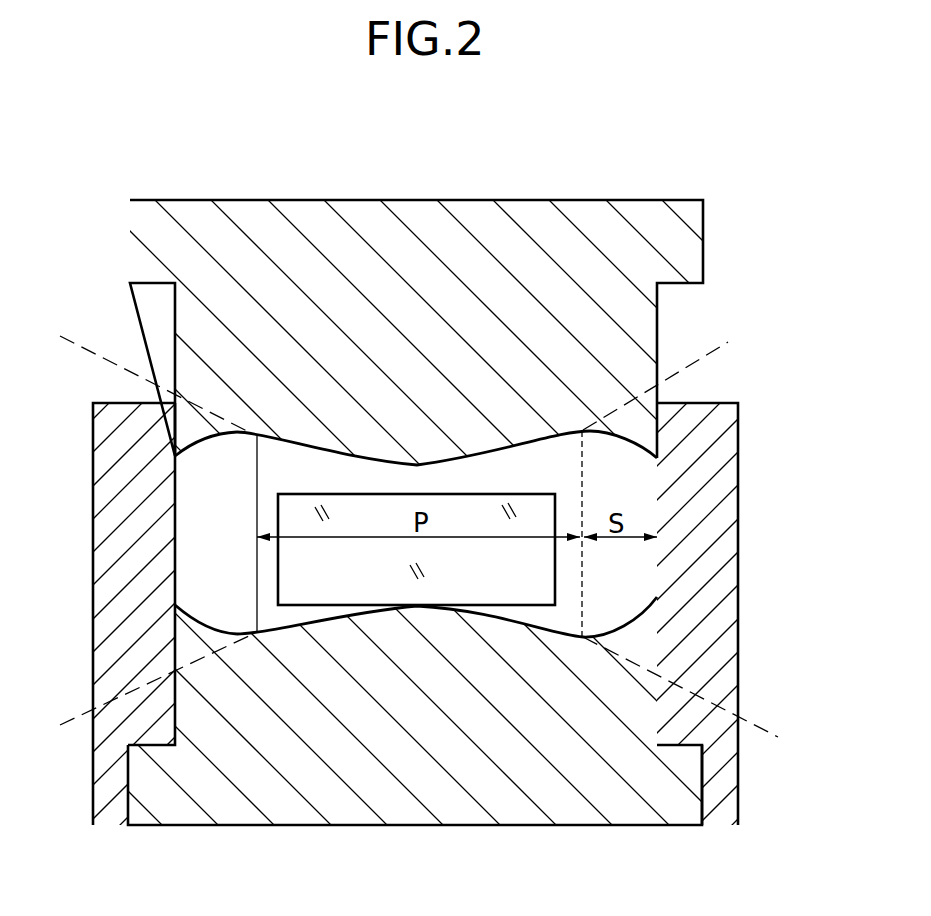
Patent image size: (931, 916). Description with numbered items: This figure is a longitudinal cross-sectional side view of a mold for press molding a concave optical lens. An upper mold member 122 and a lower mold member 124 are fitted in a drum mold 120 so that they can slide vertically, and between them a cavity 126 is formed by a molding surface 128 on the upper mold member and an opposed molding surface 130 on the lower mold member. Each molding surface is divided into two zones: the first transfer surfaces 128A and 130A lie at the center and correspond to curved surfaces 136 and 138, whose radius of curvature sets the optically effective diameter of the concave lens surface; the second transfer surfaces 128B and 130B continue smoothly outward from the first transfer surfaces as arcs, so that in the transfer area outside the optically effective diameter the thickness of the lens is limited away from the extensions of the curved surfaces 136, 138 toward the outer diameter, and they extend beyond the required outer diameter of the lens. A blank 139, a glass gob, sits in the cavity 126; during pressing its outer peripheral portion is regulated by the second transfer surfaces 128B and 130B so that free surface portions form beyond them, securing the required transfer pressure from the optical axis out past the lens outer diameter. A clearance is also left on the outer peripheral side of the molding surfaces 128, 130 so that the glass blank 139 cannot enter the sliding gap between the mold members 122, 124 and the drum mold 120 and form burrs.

The drum mold 120 is at (465, 641).
The upper mold member 122 is at (693, 252).
The lower mold member 124 is at (518, 812).
The cavity 126 is at (640, 502).
The molding surface 128 is at (416, 459).
The first transfer surface 128A is at (358, 440).
The second transfer surface 128B is at (200, 447).
The molding surface 130 is at (416, 604).
The first transfer surface 130A is at (336, 612).
The second transfer surface 130B is at (205, 622).
The curved surface 136 is at (705, 358).
The curved surface 138 is at (778, 737).
The blank (glass gob) 139 is at (337, 508).